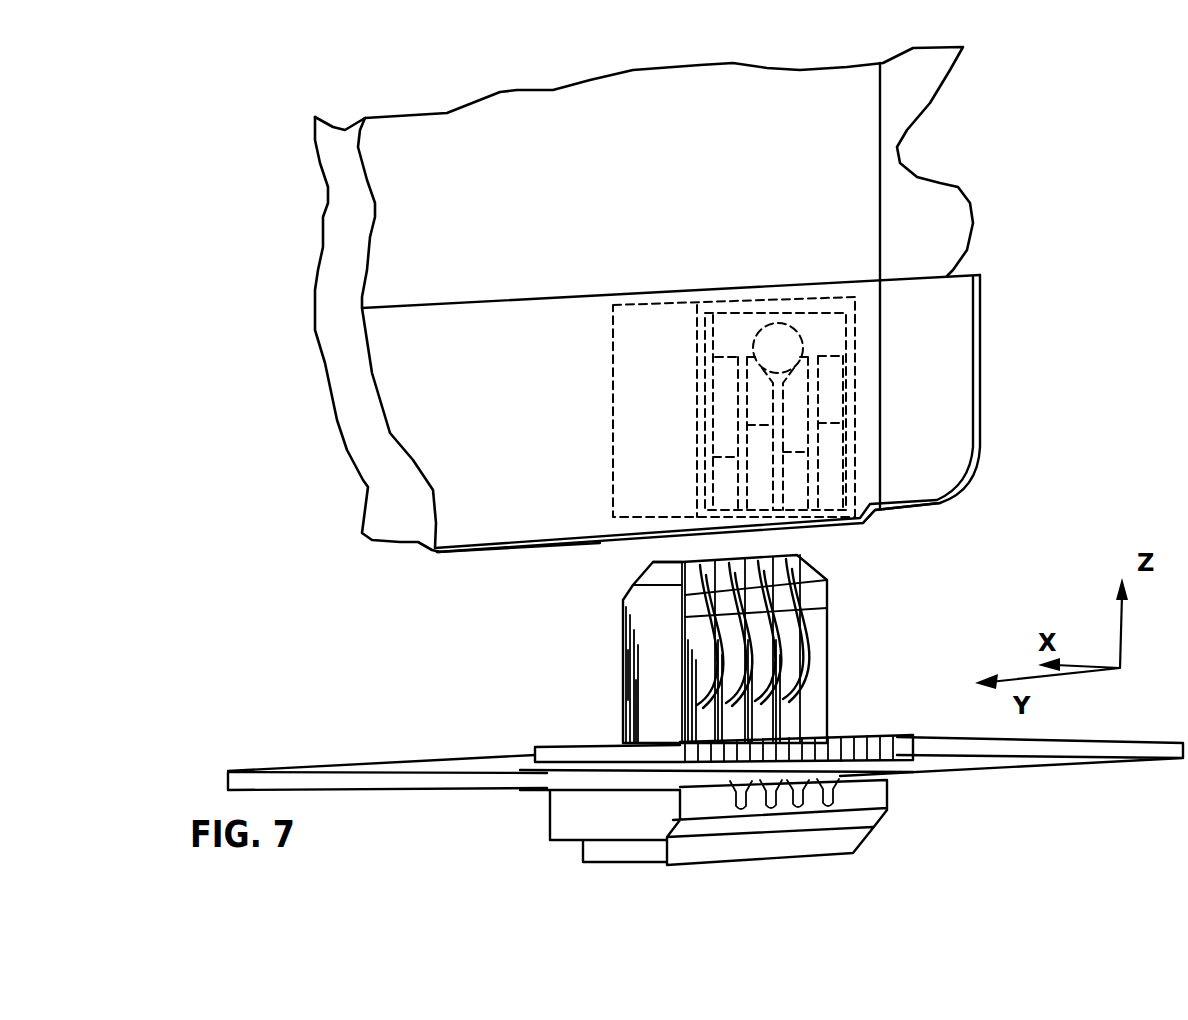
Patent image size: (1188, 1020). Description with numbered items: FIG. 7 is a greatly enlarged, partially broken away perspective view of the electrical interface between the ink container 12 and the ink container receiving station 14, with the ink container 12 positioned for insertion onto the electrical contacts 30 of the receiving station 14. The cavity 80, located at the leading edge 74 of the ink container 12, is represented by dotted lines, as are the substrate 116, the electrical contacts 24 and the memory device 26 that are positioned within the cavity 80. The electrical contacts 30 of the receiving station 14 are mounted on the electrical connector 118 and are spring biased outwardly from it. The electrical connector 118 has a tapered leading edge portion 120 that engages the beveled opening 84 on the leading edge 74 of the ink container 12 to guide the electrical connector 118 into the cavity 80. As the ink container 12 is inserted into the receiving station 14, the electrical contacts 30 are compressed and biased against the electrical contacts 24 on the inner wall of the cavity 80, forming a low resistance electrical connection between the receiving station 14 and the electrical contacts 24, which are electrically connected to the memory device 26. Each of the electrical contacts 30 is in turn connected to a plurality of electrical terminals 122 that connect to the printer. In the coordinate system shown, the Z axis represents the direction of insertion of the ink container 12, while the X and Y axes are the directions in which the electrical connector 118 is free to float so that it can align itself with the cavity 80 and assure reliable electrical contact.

The ink container 12 is at (960, 183).
The ink container receiving station 14 is at (443, 763).
The electrical contacts 24 is at (780, 412).
The memory device 26 is at (780, 322).
The electrical contacts 30 is at (817, 687).
The leading edge 74 is at (482, 553).
The cavity 80 is at (612, 380).
The beveled opening 84 is at (840, 523).
The substrate 116 is at (832, 335).
The electrical connector 118 is at (621, 645).
The tapered leading edge portion 120 is at (643, 575).
The electrical terminals 122 is at (803, 810).